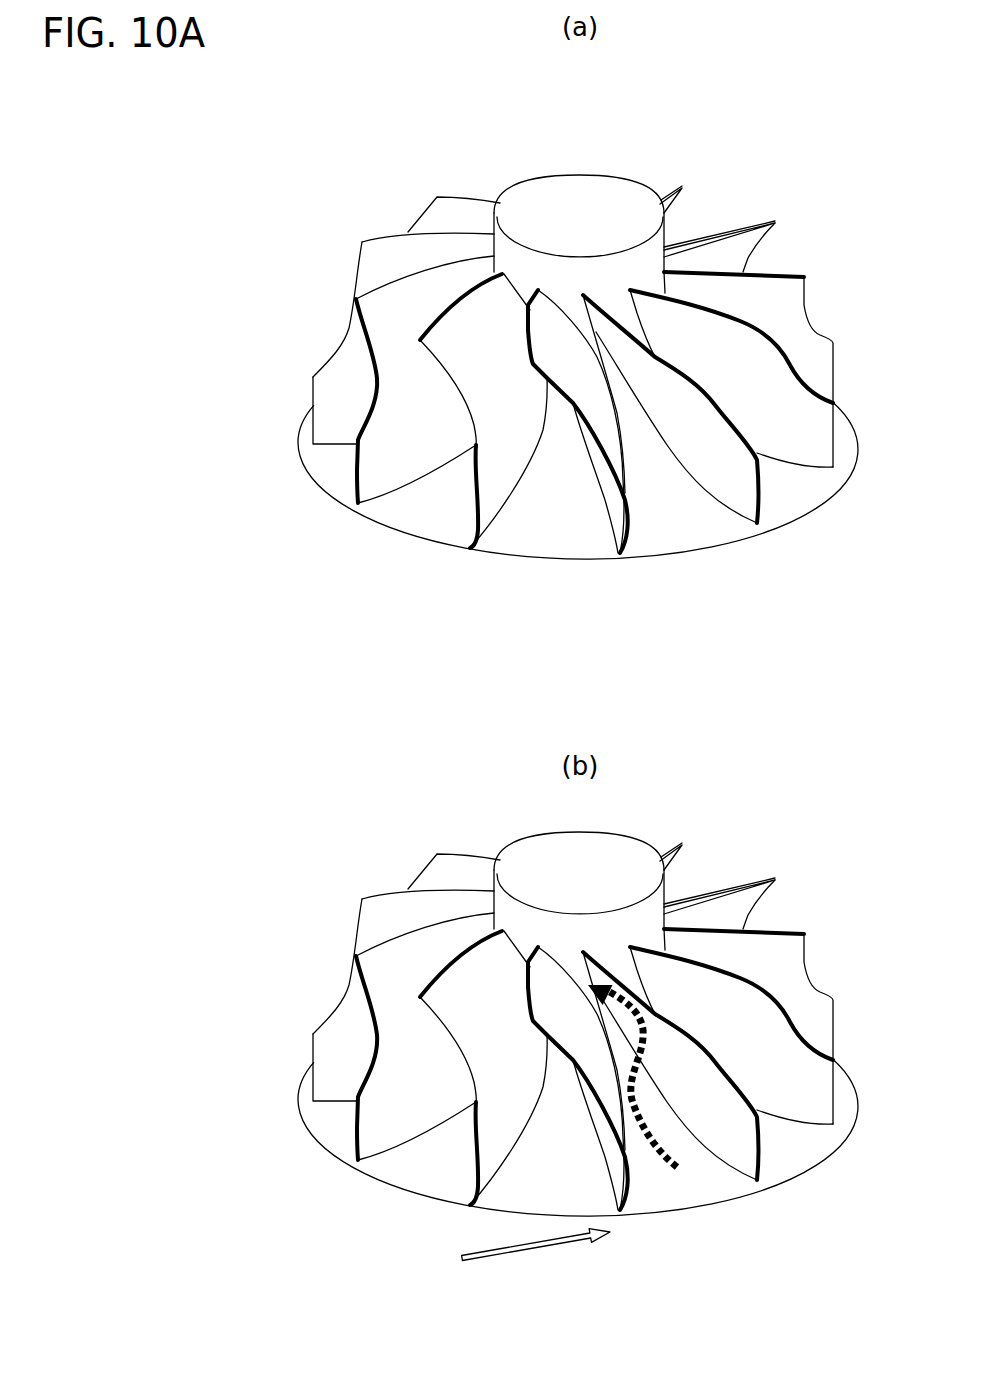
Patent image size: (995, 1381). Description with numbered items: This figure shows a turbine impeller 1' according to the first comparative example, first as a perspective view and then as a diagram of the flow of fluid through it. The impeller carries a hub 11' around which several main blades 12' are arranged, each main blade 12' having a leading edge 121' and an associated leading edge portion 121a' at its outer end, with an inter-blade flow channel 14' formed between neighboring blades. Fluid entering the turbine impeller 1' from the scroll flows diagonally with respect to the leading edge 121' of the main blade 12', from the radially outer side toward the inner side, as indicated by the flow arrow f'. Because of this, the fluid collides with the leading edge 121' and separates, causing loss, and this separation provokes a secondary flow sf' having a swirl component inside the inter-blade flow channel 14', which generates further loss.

The turbine impeller 1' is at (499, 313).
The hub 11' is at (634, 196).
The main blade 12' is at (367, 286).
The leading edge 121' is at (266, 401).
The blade tip end edge 121a' is at (308, 485).
The inter-blade flow channel 14' is at (524, 463).
The main flow f' is at (536, 1282).
The secondary flow sf' is at (648, 1160).